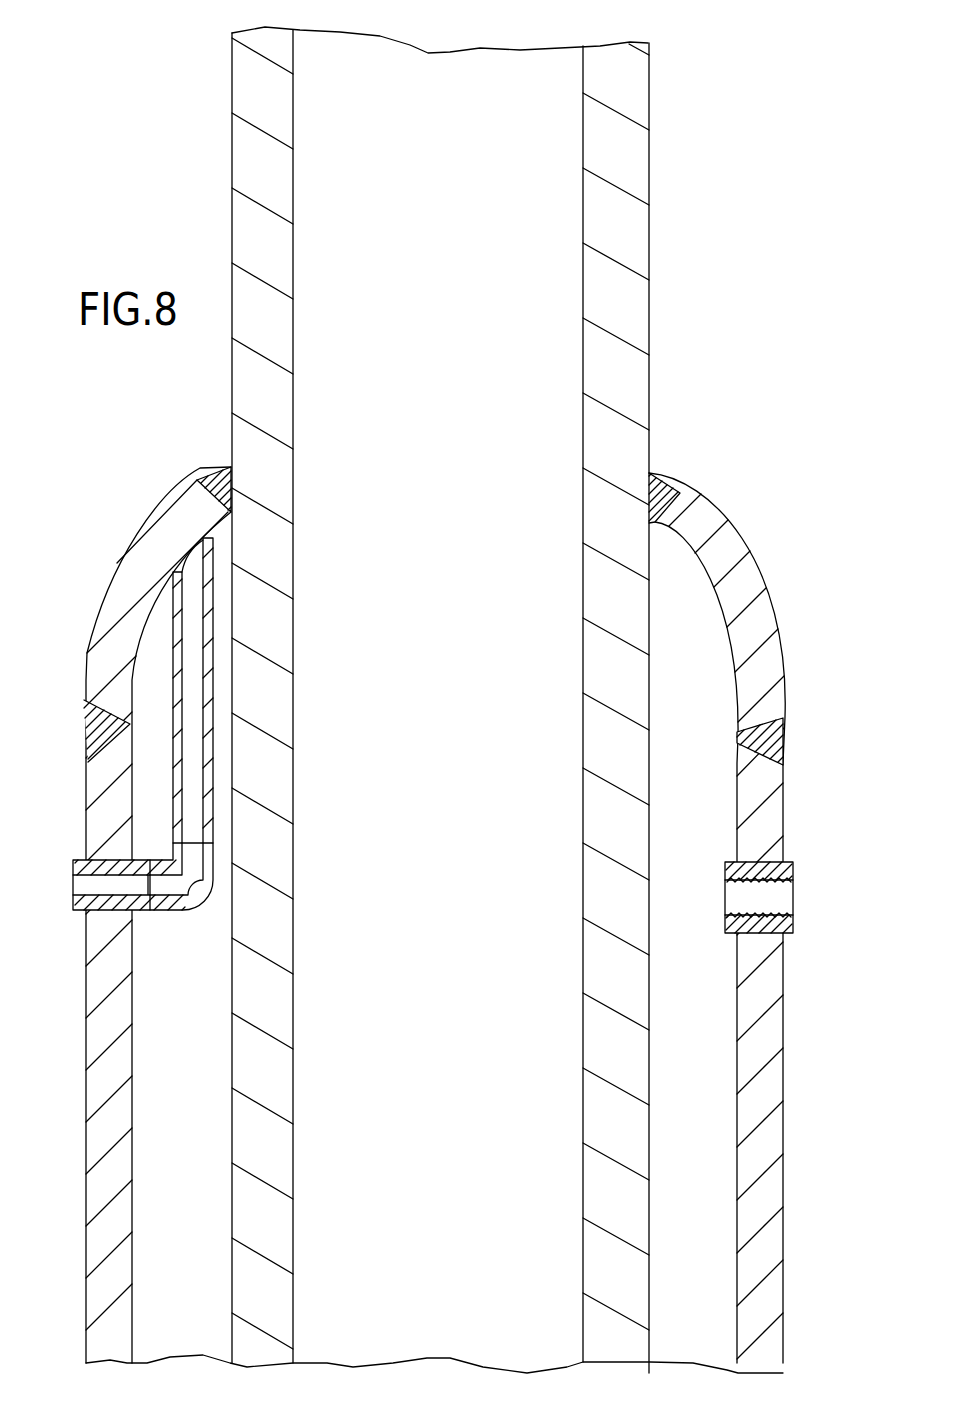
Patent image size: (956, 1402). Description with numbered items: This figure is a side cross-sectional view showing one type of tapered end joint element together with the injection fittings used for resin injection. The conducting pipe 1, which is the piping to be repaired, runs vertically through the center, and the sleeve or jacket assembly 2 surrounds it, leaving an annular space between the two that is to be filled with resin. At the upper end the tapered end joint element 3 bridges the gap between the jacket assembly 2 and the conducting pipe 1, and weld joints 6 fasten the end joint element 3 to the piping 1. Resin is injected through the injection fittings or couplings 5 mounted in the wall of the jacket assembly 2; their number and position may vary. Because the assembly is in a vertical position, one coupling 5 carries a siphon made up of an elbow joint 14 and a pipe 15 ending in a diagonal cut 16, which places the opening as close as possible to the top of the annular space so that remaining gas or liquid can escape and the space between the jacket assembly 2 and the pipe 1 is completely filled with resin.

The conducting pipe 1 is at (232, 237).
The jacket assembly 2 is at (57, 1108).
The end joint element 3 is at (730, 535).
The injection fitting 5 is at (85, 893).
The weld joint 6 is at (224, 468).
The elbow joint 14 is at (183, 893).
The pipe 15 is at (195, 742).
The diagonal cut 16 is at (185, 575).